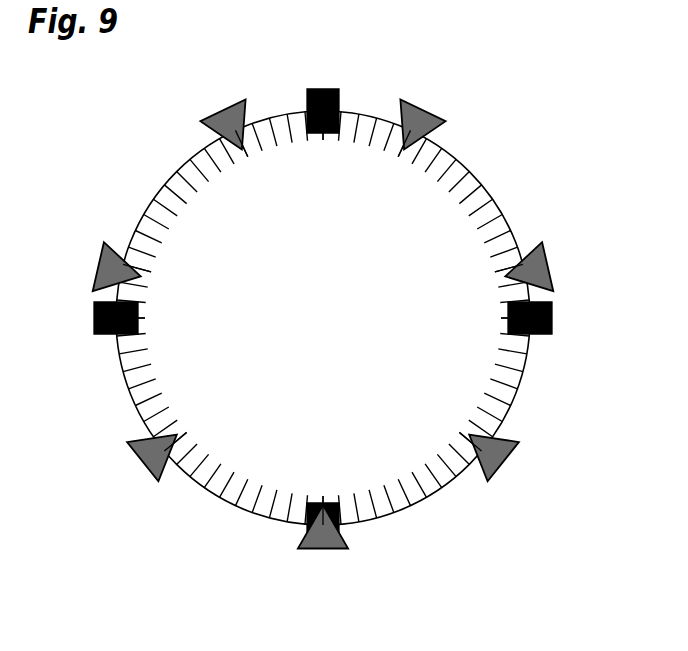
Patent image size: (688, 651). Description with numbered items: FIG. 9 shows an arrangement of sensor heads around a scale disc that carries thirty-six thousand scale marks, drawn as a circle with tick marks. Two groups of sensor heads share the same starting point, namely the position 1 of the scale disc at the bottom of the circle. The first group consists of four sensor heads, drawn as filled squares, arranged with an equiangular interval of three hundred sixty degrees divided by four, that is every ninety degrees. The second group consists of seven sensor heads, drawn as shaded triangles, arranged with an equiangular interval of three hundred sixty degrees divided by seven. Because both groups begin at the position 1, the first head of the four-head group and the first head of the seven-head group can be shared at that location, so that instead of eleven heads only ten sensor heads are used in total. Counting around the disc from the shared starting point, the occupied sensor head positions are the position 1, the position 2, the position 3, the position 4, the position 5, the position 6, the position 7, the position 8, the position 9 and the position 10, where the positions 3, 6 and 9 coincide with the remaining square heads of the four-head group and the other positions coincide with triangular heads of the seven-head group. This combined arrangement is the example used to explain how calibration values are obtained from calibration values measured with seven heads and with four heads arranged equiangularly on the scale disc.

The position of the scale disc 1 is at (321, 492).
The sensor head position 2 is at (458, 427).
The sensor head position 3 is at (493, 320).
The sensor head position 4 is at (490, 278).
The sensor head position 5 is at (398, 164).
The sensor head position 6 is at (320, 149).
The sensor head position 7 is at (245, 164).
The sensor head position 8 is at (150, 278).
The sensor head position 9 is at (146, 320).
The sensor head position 10 is at (196, 427).